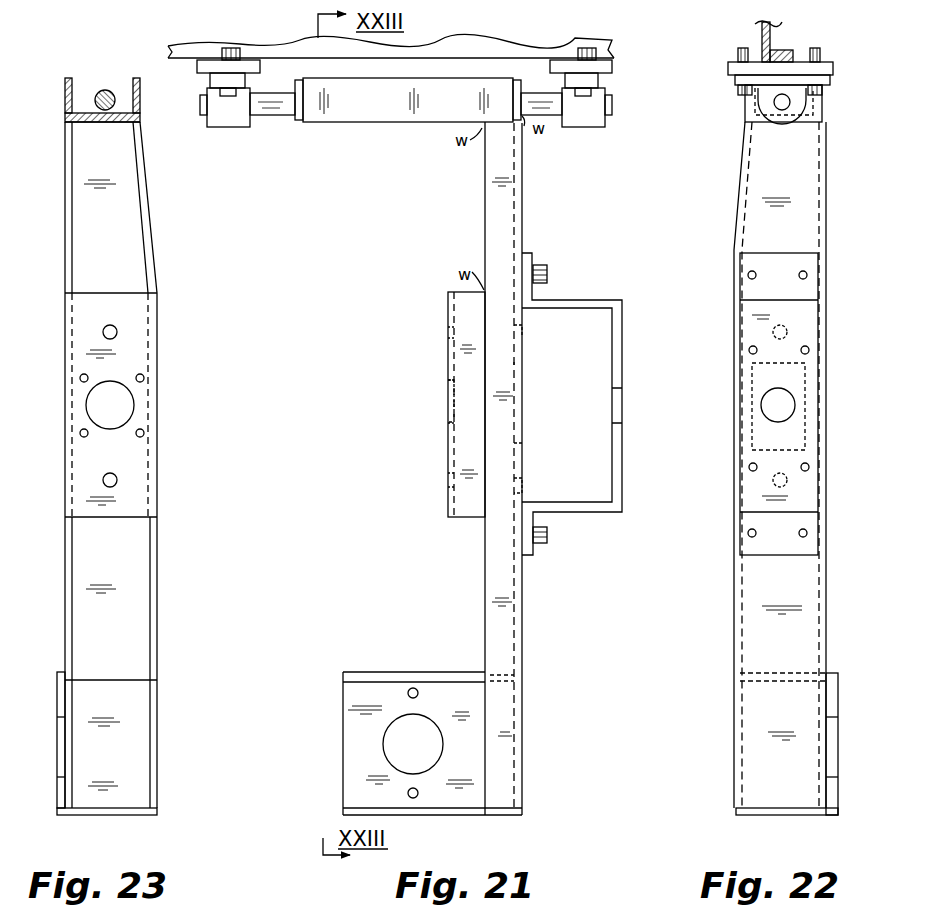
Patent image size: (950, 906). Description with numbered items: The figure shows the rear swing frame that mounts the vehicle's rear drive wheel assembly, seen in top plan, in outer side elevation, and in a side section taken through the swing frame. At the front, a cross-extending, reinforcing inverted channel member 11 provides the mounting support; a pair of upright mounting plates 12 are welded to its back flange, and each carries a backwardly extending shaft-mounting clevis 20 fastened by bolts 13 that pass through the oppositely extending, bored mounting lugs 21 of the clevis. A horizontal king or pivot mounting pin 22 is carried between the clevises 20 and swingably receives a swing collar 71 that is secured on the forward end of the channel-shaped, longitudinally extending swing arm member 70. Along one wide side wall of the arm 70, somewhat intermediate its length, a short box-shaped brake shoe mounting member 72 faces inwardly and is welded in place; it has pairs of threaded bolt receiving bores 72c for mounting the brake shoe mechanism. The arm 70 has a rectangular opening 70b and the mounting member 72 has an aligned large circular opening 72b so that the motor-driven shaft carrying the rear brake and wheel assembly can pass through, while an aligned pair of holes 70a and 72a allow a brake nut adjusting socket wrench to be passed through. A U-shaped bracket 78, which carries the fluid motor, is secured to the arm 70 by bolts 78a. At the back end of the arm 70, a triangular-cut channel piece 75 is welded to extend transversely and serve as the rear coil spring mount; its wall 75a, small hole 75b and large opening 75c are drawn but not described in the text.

In FIG. 21, the inverted channel member 11 is at (580, 38).
In FIG. 22, the inverted channel member 11 is at (758, 26).
In FIG. 21, the mounting plate 12 is at (197, 66).
In FIG. 22, the mounting plate 12 is at (728, 68).
In FIG. 21, the bolt 13 is at (244, 34).
In FIG. 22, the bolt 13 is at (738, 54).
In FIG. 21, the shaft-mounting clevis 20 is at (207, 124).
In FIG. 22, the shaft-mounting clevis 20 is at (822, 102).
In FIG. 21, the mounting lug 21 is at (245, 80).
In FIG. 22, the mounting lug 21 is at (735, 82).
In FIG. 23, the pivot mounting pin 22 is at (112, 93).
In FIG. 21, the pivot mounting pin 22 is at (266, 115).
In FIG. 22, the pivot mounting pin 22 is at (786, 108).
In FIG. 23, the swing arm member 70 is at (130, 196).
In FIG. 21, the swing arm member 70 is at (568, 212).
In FIG. 22, the swing arm member 70 is at (806, 208).
In FIG. 21, the hole 70a is at (522, 480).
In FIG. 22, the hole 70a is at (787, 330).
In FIG. 21, the rectangular opening 70b is at (522, 373).
In FIG. 22, the rectangular opening 70b is at (805, 388).
In FIG. 23, the swing collar 71 is at (72, 84).
In FIG. 21, the swing collar 71 is at (358, 122).
In FIG. 22, the swing collar 71 is at (745, 115).
In FIG. 23, the brake shoe mounting member 72 is at (82, 462).
In FIG. 21, the brake shoe mounting member 72 is at (448, 482).
In FIG. 23, the hole 72a is at (117, 330).
In FIG. 23, the circular opening 72b is at (130, 405).
In FIG. 21, the circular opening 72b is at (450, 420).
In FIG. 23, the threaded bolt receiving bore 72c is at (144, 435).
In FIG. 23, the channel piece 75 is at (140, 815).
In FIG. 21, the channel piece 75 is at (370, 672).
In FIG. 22, the channel piece 75 is at (795, 815).
In FIG. 23, the side wall of base box 75a is at (57, 742).
In FIG. 21, the side wall of base box 75a is at (358, 780).
In FIG. 22, the side wall of base box 75a is at (838, 780).
In FIG. 21, the hole in base box 75b is at (438, 662).
In FIG. 21, the large opening in base box 75c is at (386, 748).
In FIG. 21, the U-shaped bracket 78 is at (622, 300).
In FIG. 22, the U-shaped bracket 78 is at (752, 262).
In FIG. 21, the bolt 78a is at (547, 270).
In FIG. 22, the bolt 78a is at (807, 275).